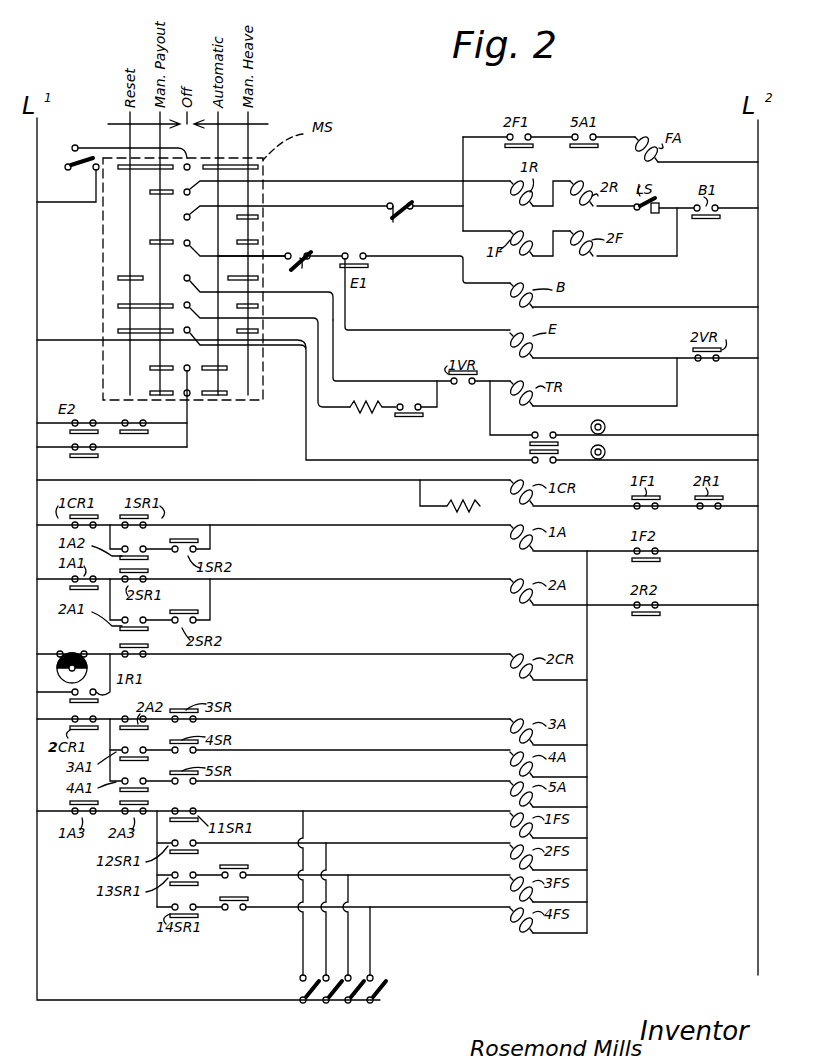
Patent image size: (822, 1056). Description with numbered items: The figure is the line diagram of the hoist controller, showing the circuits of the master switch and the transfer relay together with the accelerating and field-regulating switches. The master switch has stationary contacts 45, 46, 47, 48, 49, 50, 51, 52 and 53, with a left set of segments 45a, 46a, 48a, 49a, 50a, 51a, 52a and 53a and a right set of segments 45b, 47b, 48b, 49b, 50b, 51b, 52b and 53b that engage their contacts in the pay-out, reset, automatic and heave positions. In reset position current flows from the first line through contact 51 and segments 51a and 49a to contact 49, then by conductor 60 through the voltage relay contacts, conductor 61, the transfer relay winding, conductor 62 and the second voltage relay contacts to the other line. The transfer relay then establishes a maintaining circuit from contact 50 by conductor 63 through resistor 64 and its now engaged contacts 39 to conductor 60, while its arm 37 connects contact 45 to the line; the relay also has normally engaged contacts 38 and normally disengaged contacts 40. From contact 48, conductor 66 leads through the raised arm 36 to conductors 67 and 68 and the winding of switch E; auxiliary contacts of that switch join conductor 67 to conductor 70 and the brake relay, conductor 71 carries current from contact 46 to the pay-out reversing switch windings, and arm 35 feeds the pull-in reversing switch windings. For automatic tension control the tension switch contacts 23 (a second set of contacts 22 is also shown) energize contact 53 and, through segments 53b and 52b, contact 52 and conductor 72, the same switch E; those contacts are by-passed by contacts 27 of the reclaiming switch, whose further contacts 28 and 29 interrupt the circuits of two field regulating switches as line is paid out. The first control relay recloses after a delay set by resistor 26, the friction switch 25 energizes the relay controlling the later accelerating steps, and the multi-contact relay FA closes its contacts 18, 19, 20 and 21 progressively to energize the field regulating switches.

The contact of multi-contact relay FA 18 is at (306, 1004).
The contact of multi-contact relay FA 19 is at (326, 1004).
The contact of multi-contact relay FA 20 is at (352, 1004).
The contact of multi-contact relay FA 21 is at (372, 1004).
The thermal switch TS22 22 is at (136, 660).
The tension switch contacts 23 is at (100, 453).
The friction switch 25 is at (82, 650).
The resistor 26 is at (440, 508).
The reclaiming switch contacts 27 is at (150, 428).
The reclaiming switch contacts 28 is at (238, 914).
The reclaiming switch contacts 29 is at (232, 882).
The pivoted contact arm of transfer relay 35 is at (405, 218).
The pivoted contact arm of transfer relay 36 is at (312, 250).
The pivoted contact arm of transfer relay 37 is at (112, 173).
The normally engaged contacts of transfer relay 38 is at (534, 462).
The normally disengaged contacts of transfer relay 39 is at (424, 415).
The normally disengaged contacts of transfer relay 40 is at (532, 437).
The stationary contact of master switch 45 is at (190, 164).
The master switch segment 45a is at (122, 170).
The master switch segment 45b is at (258, 167).
The stationary contact of master switch 46 is at (199, 192).
The master switch segment 46a is at (150, 194).
The stationary contact of master switch 47 is at (198, 224).
The master switch segment 47b is at (258, 217).
The stationary contact of master switch 48 is at (179, 251).
The master switch segment 48a is at (150, 244).
The master switch segment 48b is at (258, 242).
The stationary contact of master switch 49 is at (199, 278).
The master switch segment 49a is at (118, 278).
The master switch segment 49b is at (258, 278).
The stationary contact of master switch 50 is at (199, 305).
The master switch segment 50a is at (118, 306).
The master switch segment 50b is at (258, 306).
The stationary contact of master switch 51 is at (199, 330).
The master switch segment 51a is at (118, 331).
The master switch segment 51b is at (258, 331).
The stationary contact of master switch 52 is at (186, 365).
The master switch segment 52a is at (150, 368).
The master switch segment 52b is at (227, 368).
The stationary contact of master switch 53 is at (197, 386).
The master switch segment 53a is at (150, 393).
The master switch segment 53b is at (215, 395).
The conductor 60 is at (333, 360).
The conductor 61 is at (496, 390).
The conductor 62 is at (640, 406).
The conductor 63 is at (318, 398).
The resistor 64 is at (366, 413).
The conductor 66 is at (236, 256).
The conductor 67 is at (314, 269).
The conductor 68 is at (345, 318).
The conductor 70 is at (436, 258).
The conductor 71 is at (400, 180).
The conductor 72 is at (320, 310).